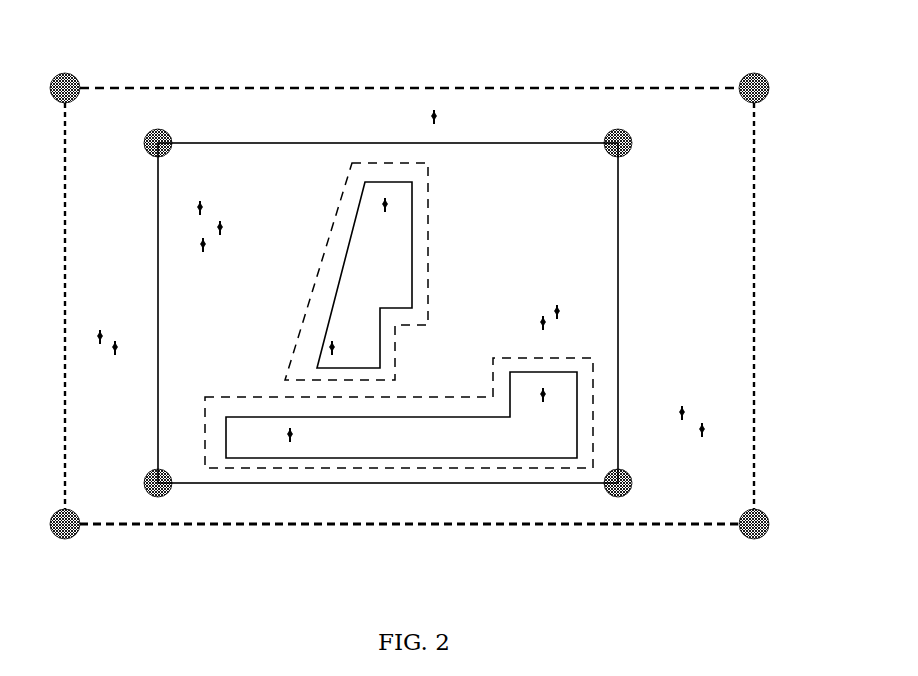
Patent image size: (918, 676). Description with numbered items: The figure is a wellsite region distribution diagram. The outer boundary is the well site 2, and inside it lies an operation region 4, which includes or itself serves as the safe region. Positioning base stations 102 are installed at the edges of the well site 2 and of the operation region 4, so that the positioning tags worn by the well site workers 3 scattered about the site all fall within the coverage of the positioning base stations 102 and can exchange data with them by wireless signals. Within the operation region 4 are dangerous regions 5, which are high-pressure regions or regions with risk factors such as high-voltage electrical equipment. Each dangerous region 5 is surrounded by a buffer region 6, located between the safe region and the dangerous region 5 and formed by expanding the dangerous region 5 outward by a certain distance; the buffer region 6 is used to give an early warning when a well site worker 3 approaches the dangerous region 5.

The positioning base station 102 is at (68, 85).
The well site 2 is at (278, 113).
The well site worker 3 is at (432, 108).
The operation region 4 is at (497, 177).
The dangerous region 5 is at (388, 253).
The buffer region 6 is at (315, 277).